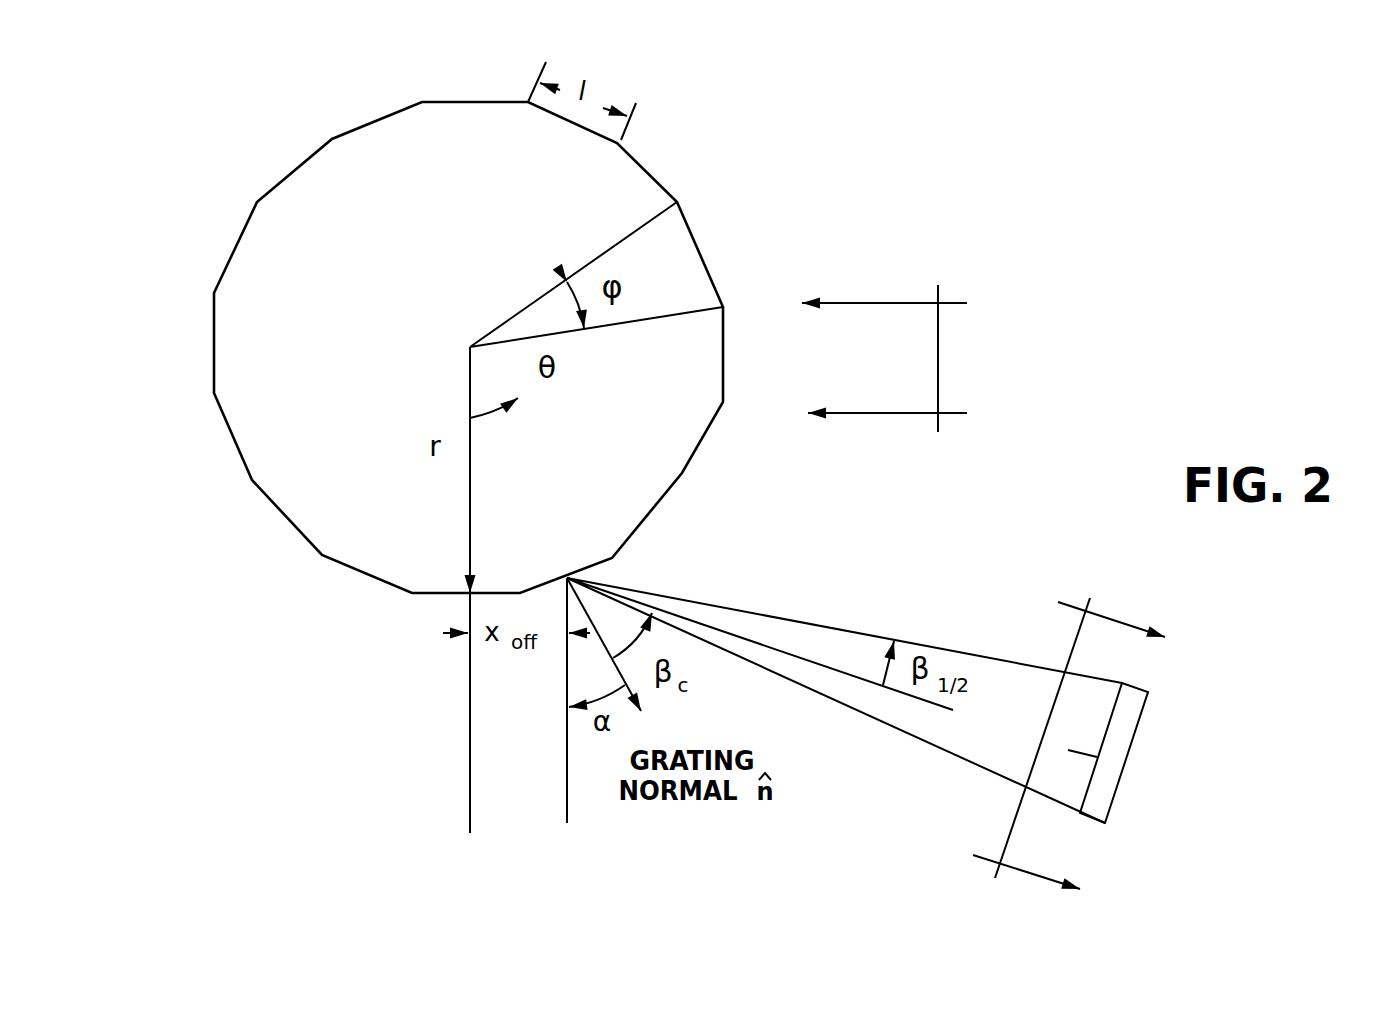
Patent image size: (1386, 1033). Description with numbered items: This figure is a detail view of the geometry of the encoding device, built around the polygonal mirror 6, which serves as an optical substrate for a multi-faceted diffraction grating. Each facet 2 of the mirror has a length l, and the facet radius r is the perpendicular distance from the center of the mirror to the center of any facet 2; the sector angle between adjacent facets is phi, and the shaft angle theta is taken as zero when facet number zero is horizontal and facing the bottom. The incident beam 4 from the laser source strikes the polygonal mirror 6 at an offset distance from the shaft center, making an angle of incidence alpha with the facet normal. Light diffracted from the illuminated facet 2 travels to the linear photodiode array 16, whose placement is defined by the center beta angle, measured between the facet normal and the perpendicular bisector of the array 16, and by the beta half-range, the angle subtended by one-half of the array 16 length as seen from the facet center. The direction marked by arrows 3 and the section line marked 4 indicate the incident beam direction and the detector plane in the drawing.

The facet 2 is at (367, 122).
The polygonal mirror 6 is at (254, 434).
The incident light beam 3 is at (900, 358).
The beam 4 is at (1087, 758).
The linear array detector 16 is at (1120, 778).